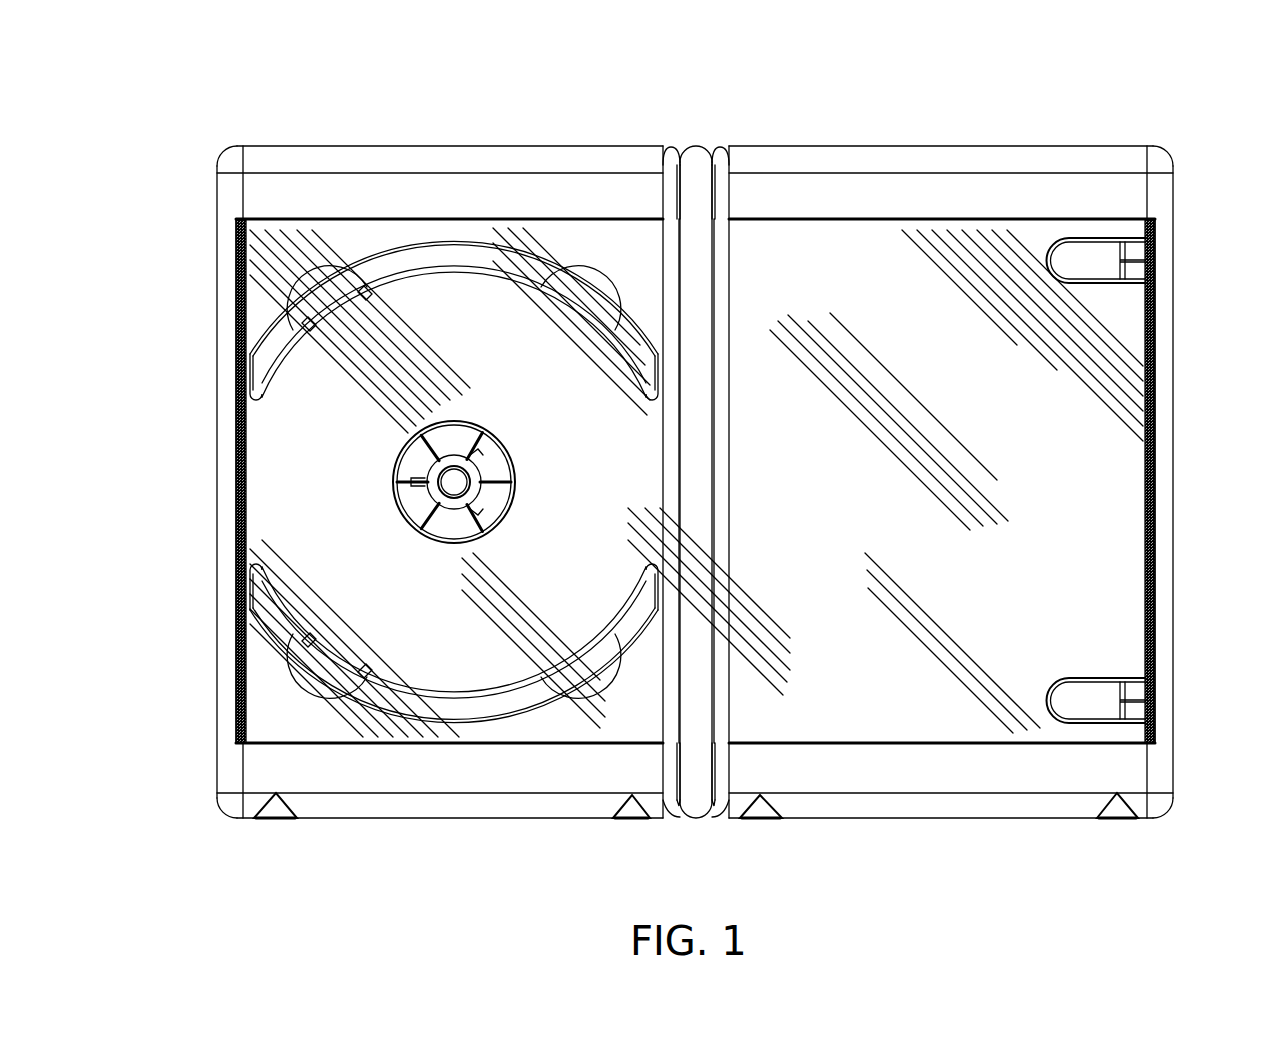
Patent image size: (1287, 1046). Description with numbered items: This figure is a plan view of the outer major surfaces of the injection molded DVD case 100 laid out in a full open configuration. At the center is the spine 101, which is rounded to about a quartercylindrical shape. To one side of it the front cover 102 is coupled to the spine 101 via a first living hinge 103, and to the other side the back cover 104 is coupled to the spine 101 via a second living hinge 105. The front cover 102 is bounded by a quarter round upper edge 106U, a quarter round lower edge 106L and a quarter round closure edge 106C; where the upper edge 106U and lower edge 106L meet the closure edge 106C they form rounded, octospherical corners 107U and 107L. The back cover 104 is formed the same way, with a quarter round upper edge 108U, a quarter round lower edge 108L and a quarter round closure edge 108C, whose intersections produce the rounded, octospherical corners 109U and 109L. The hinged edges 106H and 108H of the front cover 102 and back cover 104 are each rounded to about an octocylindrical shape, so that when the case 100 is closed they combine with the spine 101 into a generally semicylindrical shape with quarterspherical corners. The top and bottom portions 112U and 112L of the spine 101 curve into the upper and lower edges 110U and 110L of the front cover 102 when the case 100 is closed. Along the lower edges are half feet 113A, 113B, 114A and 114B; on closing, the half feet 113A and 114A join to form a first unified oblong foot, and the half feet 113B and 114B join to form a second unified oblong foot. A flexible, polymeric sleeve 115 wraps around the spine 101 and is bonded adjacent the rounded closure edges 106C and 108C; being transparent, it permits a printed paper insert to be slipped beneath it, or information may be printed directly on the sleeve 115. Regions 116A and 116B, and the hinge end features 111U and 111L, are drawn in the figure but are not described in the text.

The DVD case 100 is at (205, 77).
The spine 101 is at (697, 153).
The front cover 102 is at (935, 185).
The first living hinge 103 is at (722, 248).
The back cover 104 is at (460, 187).
The second living hinge 105 is at (670, 248).
The upper edge of front cover 106U is at (1050, 160).
The closure edge of front cover 106C is at (1160, 192).
The hinged edge of front cover 106H is at (1003, 808).
The lower edge of front cover 106L is at (1022, 808).
The upper corner of front cover 107U is at (1160, 160).
The lower corner of front cover 107L is at (1160, 808).
The upper edge of back cover 108U is at (345, 162).
The closure edge of back cover 108C is at (232, 192).
The lower edge of back cover 108L is at (395, 808).
The hinged edge of back cover 108H is at (640, 710).
The upper corner of back cover 109U is at (232, 158).
The lower corner of back cover 109L is at (228, 805).
The upper edge of front cover at spine 110U is at (722, 157).
The lower edge of front cover at spine 110L is at (722, 805).
The upper end of hinge region 111U is at (672, 157).
The lower end of hinge region 111L is at (670, 805).
The top portion of spine 112U is at (697, 193).
The bottom portion of spine 112L is at (697, 800).
The half foot 113A is at (720, 709).
The half foot 113B is at (1120, 815).
The half foot 114A is at (672, 708).
The half foot 114B is at (275, 820).
The flexible polymeric sleeve 115 is at (1110, 572).
The tray border of second cover 116A is at (1150, 410).
The tray border of first cover 116B is at (240, 410).